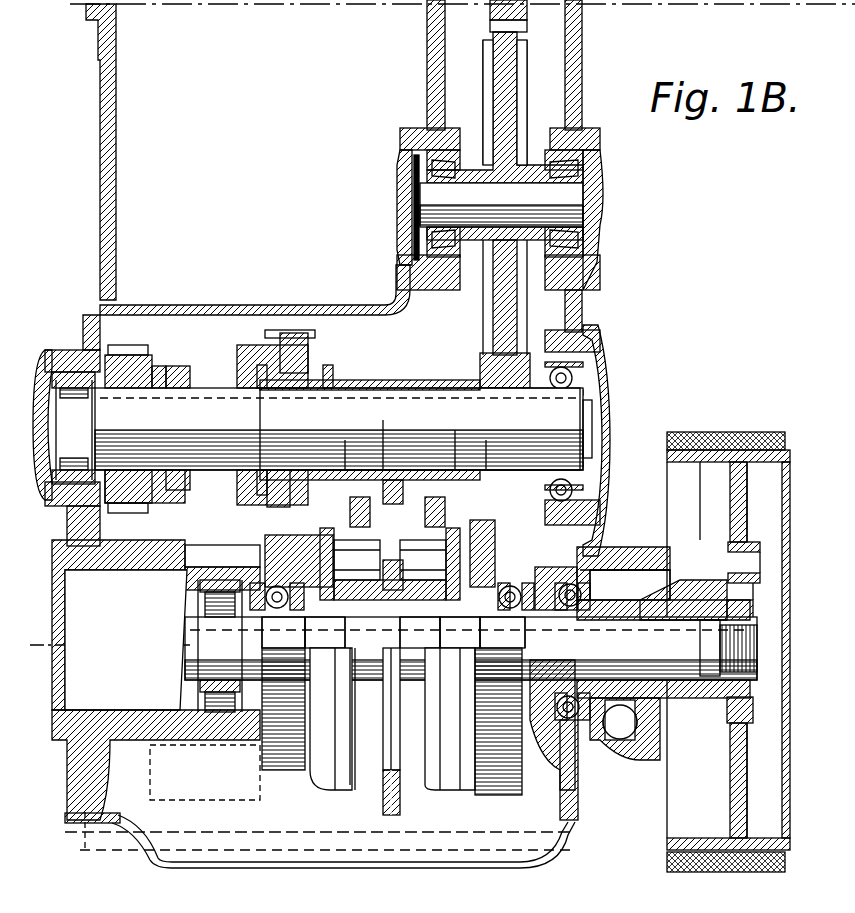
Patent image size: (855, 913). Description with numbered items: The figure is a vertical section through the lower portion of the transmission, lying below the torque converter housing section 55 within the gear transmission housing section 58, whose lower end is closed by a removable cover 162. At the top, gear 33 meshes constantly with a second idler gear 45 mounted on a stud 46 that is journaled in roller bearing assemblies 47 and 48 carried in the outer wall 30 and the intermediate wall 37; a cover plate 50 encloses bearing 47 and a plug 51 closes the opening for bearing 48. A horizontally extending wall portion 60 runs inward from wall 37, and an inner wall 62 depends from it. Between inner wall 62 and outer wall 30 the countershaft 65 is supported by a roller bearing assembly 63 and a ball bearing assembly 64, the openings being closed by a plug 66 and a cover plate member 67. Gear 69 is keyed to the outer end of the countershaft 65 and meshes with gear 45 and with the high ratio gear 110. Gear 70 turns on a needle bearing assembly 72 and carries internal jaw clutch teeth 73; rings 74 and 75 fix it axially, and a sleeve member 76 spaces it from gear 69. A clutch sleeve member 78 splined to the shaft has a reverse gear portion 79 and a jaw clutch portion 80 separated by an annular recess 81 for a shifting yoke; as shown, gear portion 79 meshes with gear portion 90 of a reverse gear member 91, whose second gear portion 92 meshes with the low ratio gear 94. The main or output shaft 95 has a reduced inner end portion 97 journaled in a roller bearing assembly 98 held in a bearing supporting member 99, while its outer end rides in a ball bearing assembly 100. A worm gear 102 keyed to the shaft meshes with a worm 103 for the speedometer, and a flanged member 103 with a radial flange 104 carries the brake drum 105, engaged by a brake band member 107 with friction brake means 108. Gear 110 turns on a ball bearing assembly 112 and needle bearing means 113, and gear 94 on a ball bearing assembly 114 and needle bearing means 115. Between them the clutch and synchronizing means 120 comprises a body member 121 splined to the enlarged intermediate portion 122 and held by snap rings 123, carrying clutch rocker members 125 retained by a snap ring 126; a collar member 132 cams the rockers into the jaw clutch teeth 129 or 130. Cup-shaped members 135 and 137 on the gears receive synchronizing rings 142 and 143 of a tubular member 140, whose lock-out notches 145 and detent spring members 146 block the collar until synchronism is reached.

The outer wall 30 is at (583, 64).
The gear 33 is at (492, 12).
The intermediate wall 37 is at (427, 46).
The second idler gear 45 is at (512, 104).
The stud 46 is at (575, 202).
The roller bearing assembly 47 is at (588, 160).
The roller bearing assembly 48 is at (448, 150).
The cover plate 50 is at (600, 228).
The plug 51 is at (397, 204).
The torque converter housing section 55 is at (98, 232).
The gear transmission housing section 58 is at (90, 318).
The horizontally extending wall portion 60 is at (236, 305).
The inner wall 62 is at (70, 525).
The roller bearing assembly 63 is at (75, 395).
The ball bearing assembly 64 is at (586, 354).
The countershaft 65 is at (372, 388).
The plug 66 is at (36, 420).
The cover plate member 67 is at (602, 388).
The gear 69 is at (482, 378).
The gear 70 is at (308, 340).
The needle bearing assembly 72 is at (330, 366).
The internal jaw clutch teeth 73 is at (240, 370).
The ring 74 is at (257, 376).
The ring 75 is at (332, 380).
The sleeve member 76 is at (392, 388).
The clutch sleeve member 78 is at (160, 366).
The reverse gear portion 79 is at (130, 358).
The jaw clutch portion 80 is at (180, 368).
The annular recess 81 is at (158, 495).
The gear portion 90 is at (152, 762).
The reverse gear member 91 is at (188, 806).
The second gear portion 92 is at (258, 778).
The low ratio gear 94 is at (265, 540).
The main or output shaft 95 is at (628, 612).
The reduced inner end portion 97 is at (212, 635).
The roller bearing assembly 98 is at (205, 602).
The bearing supporting member 99 is at (210, 570).
The ball bearing assembly 100 is at (598, 556).
The worm gear 102 is at (625, 568).
The worm / flanged member 103 is at (678, 592).
The radial flange 104 is at (758, 542).
The brake drum 105 is at (730, 490).
The brake band member 107 is at (680, 432).
The friction brake means 108 is at (740, 432).
The high ratio gear 110 is at (500, 540).
The ball bearing assembly 112 is at (505, 632).
The needle or pin bearing means 113 is at (460, 632).
The ball bearing assembly 114 is at (283, 632).
The needle bearing means 115 is at (325, 632).
The clutch and synchronizing means 120 is at (403, 460).
The body member 121 is at (392, 600).
The enlarged intermediate portion 122 is at (385, 650).
The snap ring 123 is at (378, 600).
The clutch rocker member 125 is at (420, 632).
The snap ring 126 is at (403, 655).
The jaw clutch teeth 129 is at (262, 562).
The jaw clutch teeth 130 is at (556, 572).
The collar member 132 is at (383, 436).
The annular cup-shaped member 135 is at (344, 455).
The annular cup-shaped member 137 is at (483, 462).
The tubular member 140 is at (390, 564).
The annular synchronizing ring 142 is at (357, 555).
The annular synchronizing ring 143 is at (455, 445).
The blocking or lock-out notches 145 is at (356, 512).
The spring member 146 is at (400, 796).
The removable cover 162 is at (296, 868).